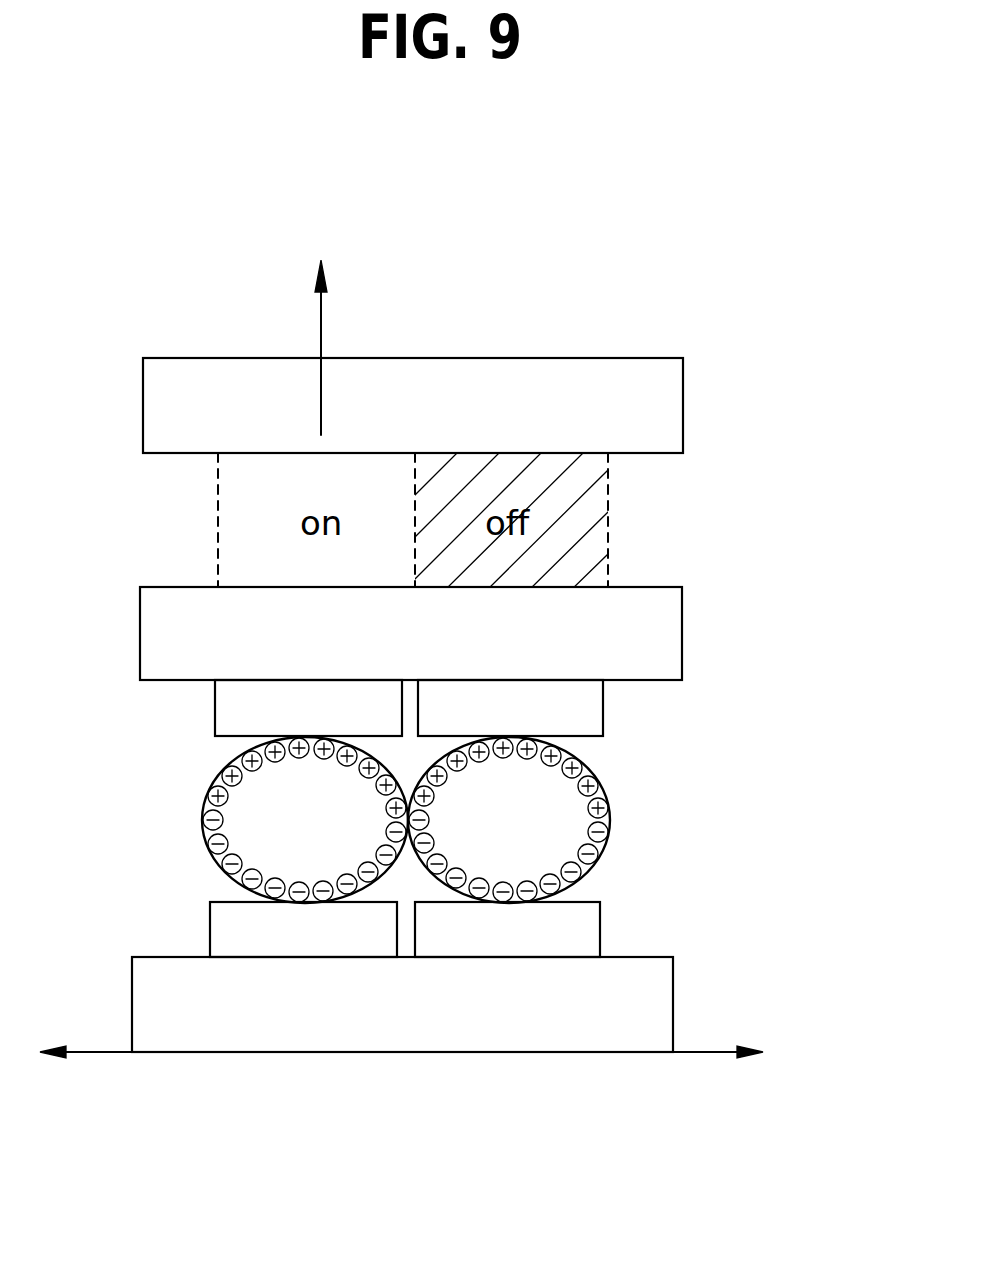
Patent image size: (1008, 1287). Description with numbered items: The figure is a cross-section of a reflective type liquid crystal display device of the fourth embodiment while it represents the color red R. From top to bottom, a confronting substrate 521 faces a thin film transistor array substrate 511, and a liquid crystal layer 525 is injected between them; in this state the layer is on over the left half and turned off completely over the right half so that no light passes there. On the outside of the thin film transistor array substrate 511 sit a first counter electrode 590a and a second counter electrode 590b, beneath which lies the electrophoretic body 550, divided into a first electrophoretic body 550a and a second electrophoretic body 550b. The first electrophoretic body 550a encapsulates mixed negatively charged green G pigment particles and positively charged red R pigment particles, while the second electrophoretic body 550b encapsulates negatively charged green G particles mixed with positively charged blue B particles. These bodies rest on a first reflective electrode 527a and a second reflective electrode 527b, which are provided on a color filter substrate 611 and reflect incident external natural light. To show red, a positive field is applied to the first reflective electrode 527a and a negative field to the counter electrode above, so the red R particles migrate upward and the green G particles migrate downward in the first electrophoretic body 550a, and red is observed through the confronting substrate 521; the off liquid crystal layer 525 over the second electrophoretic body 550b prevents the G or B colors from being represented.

The confronting substrate 521 is at (668, 410).
The liquid crystal layer 525 is at (613, 517).
The thin film transistor array substrate 511 is at (668, 640).
The first counter electrode 590a is at (228, 710).
The second counter electrode 590b is at (590, 712).
The electrophoretic body 550 is at (406, 976).
The first electrophoretic body 550a is at (360, 900).
The second electrophoretic body 550b is at (450, 900).
The first reflective electrode 527a is at (225, 927).
The second reflective electrode 527b is at (585, 930).
The color filter substrate 611 is at (658, 1003).
The red color R is at (140, 784).
The green color G is at (205, 838).
The blue color B is at (602, 793).